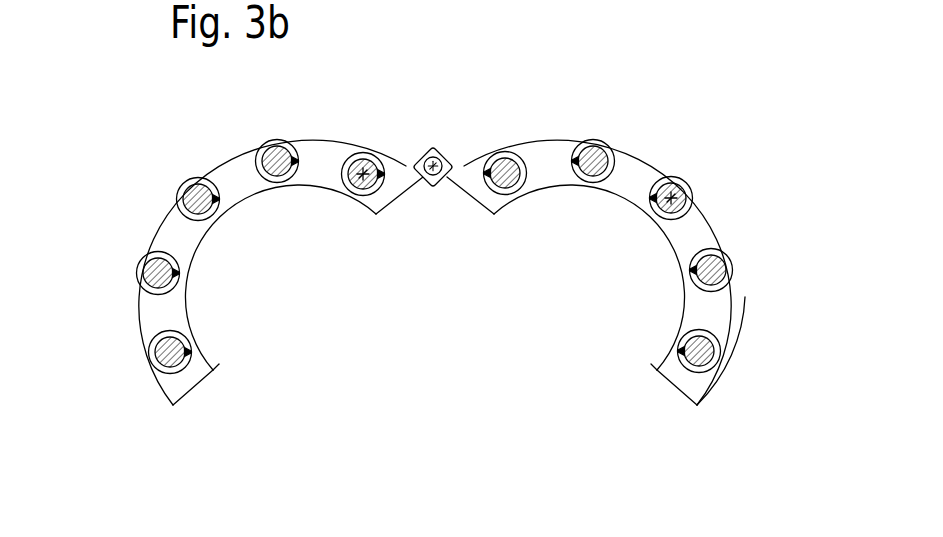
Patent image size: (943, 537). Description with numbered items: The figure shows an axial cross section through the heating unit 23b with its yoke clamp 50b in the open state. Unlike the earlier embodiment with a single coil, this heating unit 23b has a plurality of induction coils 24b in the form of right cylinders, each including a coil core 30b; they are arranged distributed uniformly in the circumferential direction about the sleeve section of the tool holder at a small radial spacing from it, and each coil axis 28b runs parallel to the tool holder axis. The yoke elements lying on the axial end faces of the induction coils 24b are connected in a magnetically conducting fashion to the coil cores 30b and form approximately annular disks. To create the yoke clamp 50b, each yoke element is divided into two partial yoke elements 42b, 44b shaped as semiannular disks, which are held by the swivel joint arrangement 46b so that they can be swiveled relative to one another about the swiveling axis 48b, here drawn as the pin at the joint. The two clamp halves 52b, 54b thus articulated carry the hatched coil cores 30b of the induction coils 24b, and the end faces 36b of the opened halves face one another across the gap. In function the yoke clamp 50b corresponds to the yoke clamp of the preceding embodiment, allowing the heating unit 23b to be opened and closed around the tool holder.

The heating unit 23b is at (449, 287).
The induction coil 24b is at (272, 140).
The coil axis 28b is at (358, 188).
The coil core 30b is at (282, 167).
The stop face 36b is at (206, 342).
The partial yoke element 42b is at (163, 383).
The partial yoke element 44b is at (727, 340).
The swivel joint arrangement 46b is at (458, 173).
The hinge pin 48b is at (438, 188).
The yoke clamp 50b is at (641, 262).
The outer surface of ring segment 52b is at (740, 320).
The first ring segment 54b is at (243, 283).